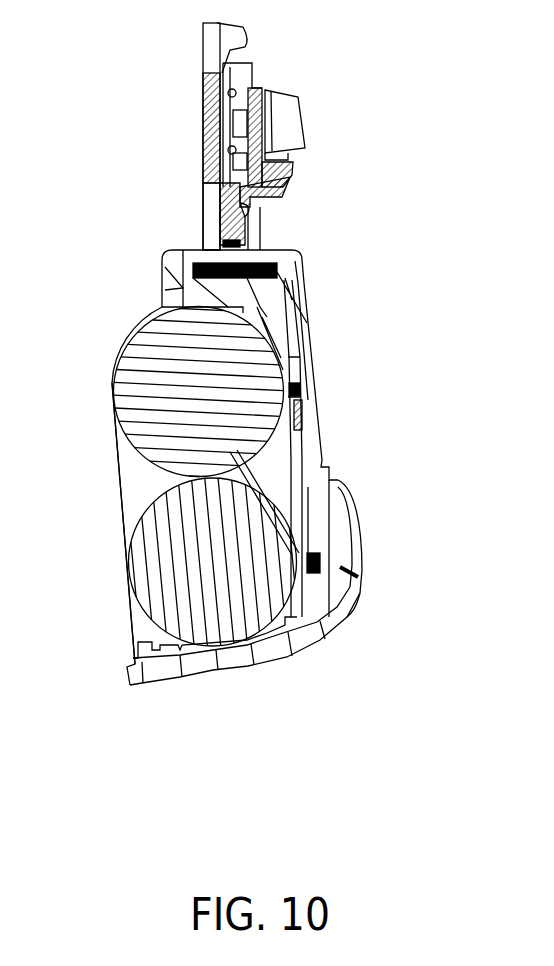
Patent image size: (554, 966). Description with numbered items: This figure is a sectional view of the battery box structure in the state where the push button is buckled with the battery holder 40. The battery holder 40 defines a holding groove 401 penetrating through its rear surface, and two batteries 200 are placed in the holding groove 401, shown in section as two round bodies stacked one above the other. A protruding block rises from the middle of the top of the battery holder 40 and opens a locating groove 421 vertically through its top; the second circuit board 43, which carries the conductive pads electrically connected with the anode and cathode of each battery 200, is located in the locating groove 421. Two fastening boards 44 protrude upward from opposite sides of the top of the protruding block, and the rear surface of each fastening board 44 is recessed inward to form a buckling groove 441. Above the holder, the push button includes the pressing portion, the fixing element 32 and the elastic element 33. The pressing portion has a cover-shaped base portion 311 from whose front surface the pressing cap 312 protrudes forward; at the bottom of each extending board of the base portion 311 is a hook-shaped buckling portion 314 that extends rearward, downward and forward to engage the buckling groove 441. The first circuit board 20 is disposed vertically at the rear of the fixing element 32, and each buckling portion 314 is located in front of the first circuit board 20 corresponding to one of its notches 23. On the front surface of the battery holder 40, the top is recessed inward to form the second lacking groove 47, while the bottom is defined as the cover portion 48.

The first circuit board 20 is at (210, 170).
The notches 23 is at (210, 222).
The fixing element 32 is at (220, 145).
The elastic element 33 is at (213, 102).
The base portion 311 is at (258, 86).
The pressing cap 312 is at (292, 120).
The hook-shaped buckling portion 314 is at (250, 212).
The fastening boards 44 is at (258, 200).
The buckling groove 441 is at (245, 244).
The second circuit board 43 is at (277, 270).
The locating groove 421 is at (285, 300).
The second lacking groove 47 is at (330, 460).
The cover portion 48 is at (352, 540).
The battery holder 40 is at (332, 601).
The holding groove 401 is at (135, 482).
The battery 200 is at (137, 568).